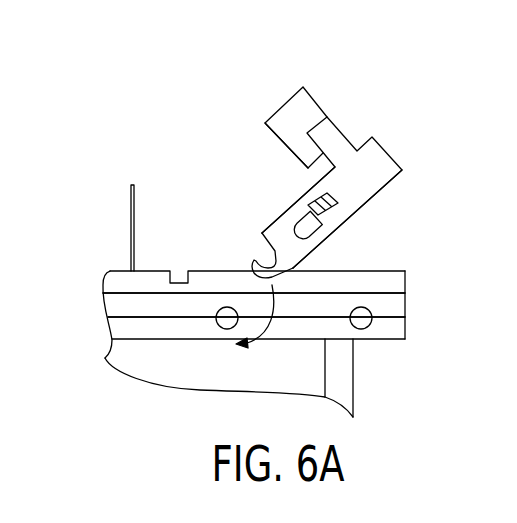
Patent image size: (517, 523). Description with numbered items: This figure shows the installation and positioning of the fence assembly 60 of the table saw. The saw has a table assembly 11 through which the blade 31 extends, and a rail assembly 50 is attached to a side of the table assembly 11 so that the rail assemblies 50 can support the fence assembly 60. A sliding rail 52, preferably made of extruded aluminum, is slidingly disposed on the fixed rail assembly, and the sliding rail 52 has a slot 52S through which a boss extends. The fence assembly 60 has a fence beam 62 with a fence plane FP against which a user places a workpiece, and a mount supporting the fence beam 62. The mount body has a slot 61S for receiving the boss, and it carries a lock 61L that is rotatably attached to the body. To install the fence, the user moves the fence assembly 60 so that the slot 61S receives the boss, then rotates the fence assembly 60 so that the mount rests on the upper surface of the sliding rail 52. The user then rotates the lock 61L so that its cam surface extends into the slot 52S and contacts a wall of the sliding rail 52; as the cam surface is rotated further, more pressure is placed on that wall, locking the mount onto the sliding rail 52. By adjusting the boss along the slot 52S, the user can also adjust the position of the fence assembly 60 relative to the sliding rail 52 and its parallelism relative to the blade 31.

The fence assembly 60 is at (411, 143).
The fence beam 62 is at (285, 103).
The fence plane FP is at (283, 142).
The lock 61L is at (330, 212).
The slot 61S is at (260, 257).
The rail assembly 50 is at (104, 320).
The table assembly 11 is at (385, 271).
The sliding rail 52 is at (393, 305).
The slot 52S is at (387, 318).
The blade 31 is at (136, 205).